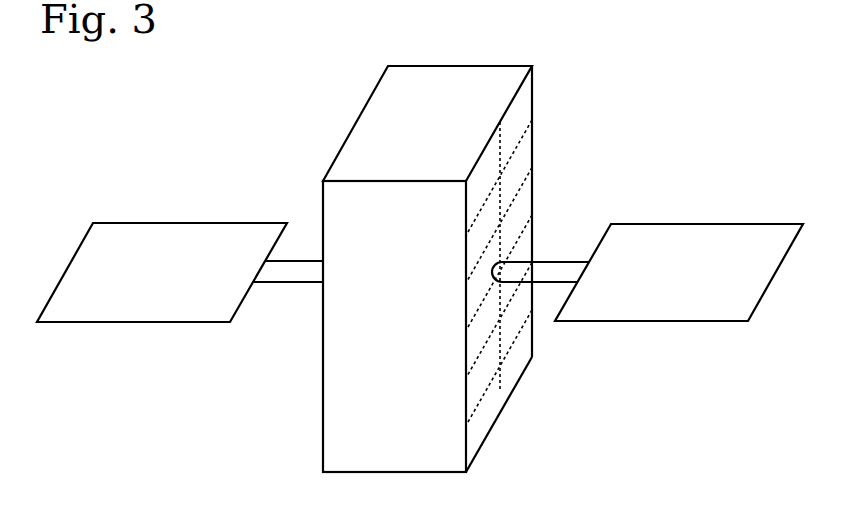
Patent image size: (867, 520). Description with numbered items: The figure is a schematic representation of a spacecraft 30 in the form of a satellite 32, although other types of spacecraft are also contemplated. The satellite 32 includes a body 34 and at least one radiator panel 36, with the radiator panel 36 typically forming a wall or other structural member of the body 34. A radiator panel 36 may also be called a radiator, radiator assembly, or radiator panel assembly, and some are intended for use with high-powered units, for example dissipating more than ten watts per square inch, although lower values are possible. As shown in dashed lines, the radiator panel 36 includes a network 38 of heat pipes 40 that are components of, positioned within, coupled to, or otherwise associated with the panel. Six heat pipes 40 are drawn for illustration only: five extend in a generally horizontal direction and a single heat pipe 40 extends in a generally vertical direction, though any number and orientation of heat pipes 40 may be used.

The spacecraft 30 is at (677, 27).
The satellite 32 is at (597, 45).
The body 34 is at (472, 36).
The radiator panel 36 is at (536, 177).
The network of heat pipes 38 is at (488, 420).
The heat pipe 40 is at (518, 193).